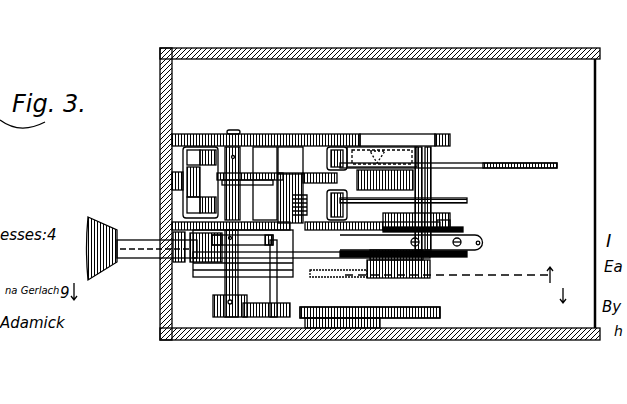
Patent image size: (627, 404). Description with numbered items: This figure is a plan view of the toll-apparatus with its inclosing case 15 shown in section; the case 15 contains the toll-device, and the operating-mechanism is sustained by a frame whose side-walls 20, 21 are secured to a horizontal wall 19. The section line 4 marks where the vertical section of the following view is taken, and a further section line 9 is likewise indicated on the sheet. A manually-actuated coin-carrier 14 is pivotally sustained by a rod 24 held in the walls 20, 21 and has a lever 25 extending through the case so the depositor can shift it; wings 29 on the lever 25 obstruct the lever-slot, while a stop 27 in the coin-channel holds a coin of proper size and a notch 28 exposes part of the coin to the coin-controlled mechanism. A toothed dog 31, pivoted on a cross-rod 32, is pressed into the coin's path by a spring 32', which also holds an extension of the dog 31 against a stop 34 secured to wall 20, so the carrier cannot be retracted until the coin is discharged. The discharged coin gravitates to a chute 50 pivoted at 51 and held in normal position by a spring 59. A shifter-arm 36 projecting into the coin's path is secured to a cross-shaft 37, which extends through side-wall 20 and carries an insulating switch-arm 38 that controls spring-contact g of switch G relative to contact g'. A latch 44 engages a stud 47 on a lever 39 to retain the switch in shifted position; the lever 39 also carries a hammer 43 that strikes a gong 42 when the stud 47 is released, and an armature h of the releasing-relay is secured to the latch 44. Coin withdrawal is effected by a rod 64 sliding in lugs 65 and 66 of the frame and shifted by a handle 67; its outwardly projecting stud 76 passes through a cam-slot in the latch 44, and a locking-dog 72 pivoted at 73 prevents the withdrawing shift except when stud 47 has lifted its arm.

The case 15 is at (368, 50).
The horizontal wall 19 is at (568, 193).
The shifter-arm 36 is at (258, 170).
The chute 50 is at (187, 157).
The spring 59 is at (195, 184).
The pivot of chute 51 is at (180, 193).
The stop 34 is at (287, 172).
The dog 31 is at (293, 172).
The cross-rod 32 is at (307, 157).
The spring 32' is at (338, 159).
The notch 28 is at (350, 167).
The stop 27 is at (368, 160).
The coin-carrier 14 is at (373, 163).
The side-wall 21 is at (405, 140).
The rod 24 is at (440, 140).
The wings 29 is at (450, 166).
The lever 25 is at (503, 166).
The side-wall 20 is at (452, 228).
The contact g' is at (425, 250).
The handle 67 is at (100, 225).
The rod 64 is at (143, 259).
The locking-dog 72 is at (195, 240).
The pivot of locking-dog 73 is at (157, 287).
The switch-arm 38 is at (185, 290).
The lug 65 is at (173, 300).
The cross-shaft 37 is at (225, 287).
The lever 39 is at (247, 318).
The stud 76 is at (265, 320).
The stud 47 is at (284, 318).
The hammer 43 is at (310, 325).
The latch 44 is at (322, 270).
The section line 9 is at (297, 277).
The section line 4 is at (560, 275).
The armature h is at (465, 279).
The lug 66 is at (323, 263).
The gong 42 is at (497, 308).